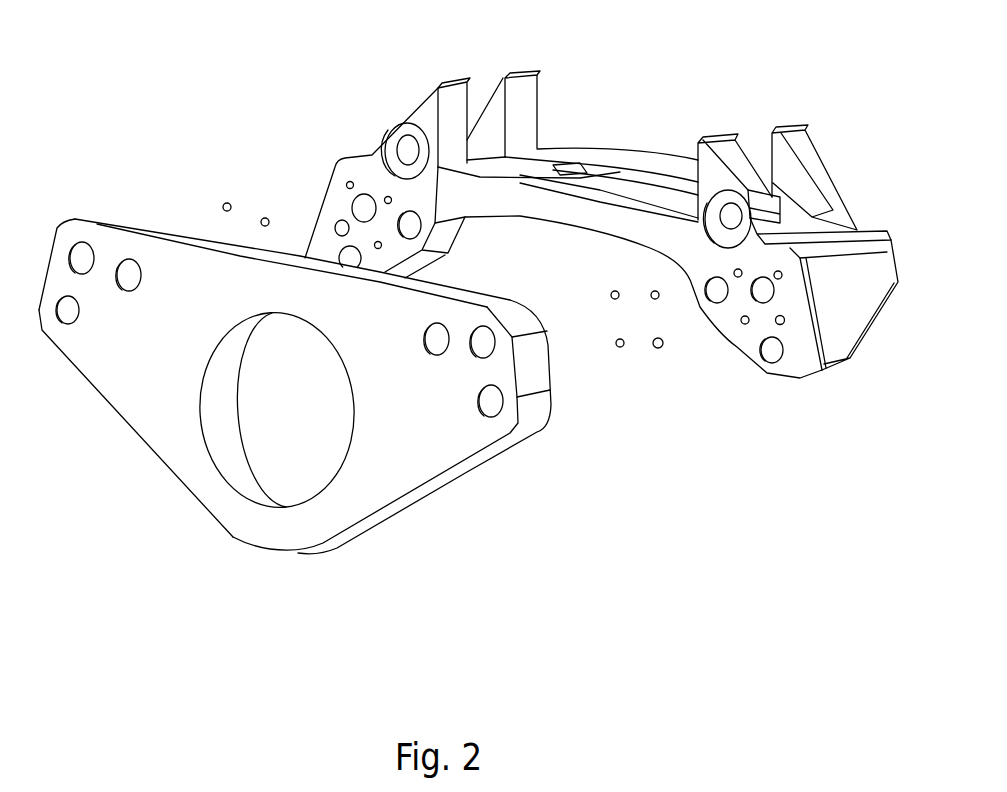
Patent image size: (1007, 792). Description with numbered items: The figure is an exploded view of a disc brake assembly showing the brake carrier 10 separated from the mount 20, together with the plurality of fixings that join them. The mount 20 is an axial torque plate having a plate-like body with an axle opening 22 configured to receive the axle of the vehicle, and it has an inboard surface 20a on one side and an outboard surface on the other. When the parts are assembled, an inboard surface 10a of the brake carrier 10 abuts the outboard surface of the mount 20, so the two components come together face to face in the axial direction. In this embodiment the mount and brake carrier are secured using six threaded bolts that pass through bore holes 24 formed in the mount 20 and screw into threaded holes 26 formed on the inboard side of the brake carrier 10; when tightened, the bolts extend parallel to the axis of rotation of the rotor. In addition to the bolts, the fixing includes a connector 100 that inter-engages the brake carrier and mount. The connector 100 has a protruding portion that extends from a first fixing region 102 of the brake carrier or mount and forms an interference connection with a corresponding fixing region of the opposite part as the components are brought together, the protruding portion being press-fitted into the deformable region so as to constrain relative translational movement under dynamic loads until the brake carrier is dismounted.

The brake carrier 10 is at (707, 355).
The inboard surface of the brake carrier 10a is at (603, 212).
The mount 20 is at (289, 306).
The inboard surface of the mount 20a is at (130, 385).
The axle opening 22 is at (260, 407).
The bore holes 24 is at (130, 268).
The threaded holes 26 is at (363, 212).
The connector 100 is at (672, 347).
The first fixing region 102 is at (782, 322).